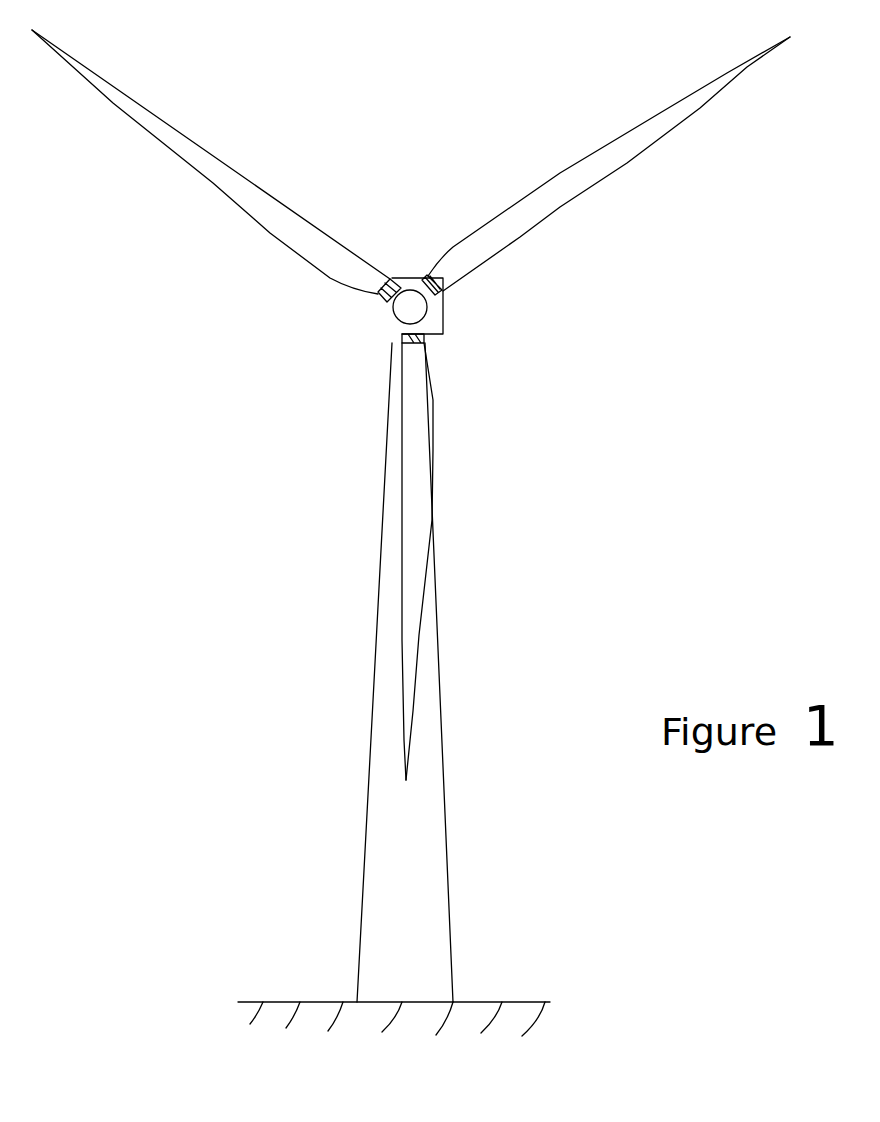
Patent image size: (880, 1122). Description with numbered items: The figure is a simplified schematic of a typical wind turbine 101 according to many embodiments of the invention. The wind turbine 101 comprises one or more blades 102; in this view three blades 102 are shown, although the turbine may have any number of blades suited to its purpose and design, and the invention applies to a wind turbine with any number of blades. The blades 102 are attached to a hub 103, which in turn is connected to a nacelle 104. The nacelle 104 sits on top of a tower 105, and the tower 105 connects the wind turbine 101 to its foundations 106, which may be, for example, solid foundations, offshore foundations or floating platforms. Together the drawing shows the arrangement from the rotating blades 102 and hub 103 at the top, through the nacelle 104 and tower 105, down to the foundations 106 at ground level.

The wind turbine 101 is at (765, 303).
The blades 102 is at (210, 167).
The hub 103 is at (409, 312).
The nacelle 104 is at (438, 316).
The tower 105 is at (445, 787).
The foundations 106 is at (394, 1044).